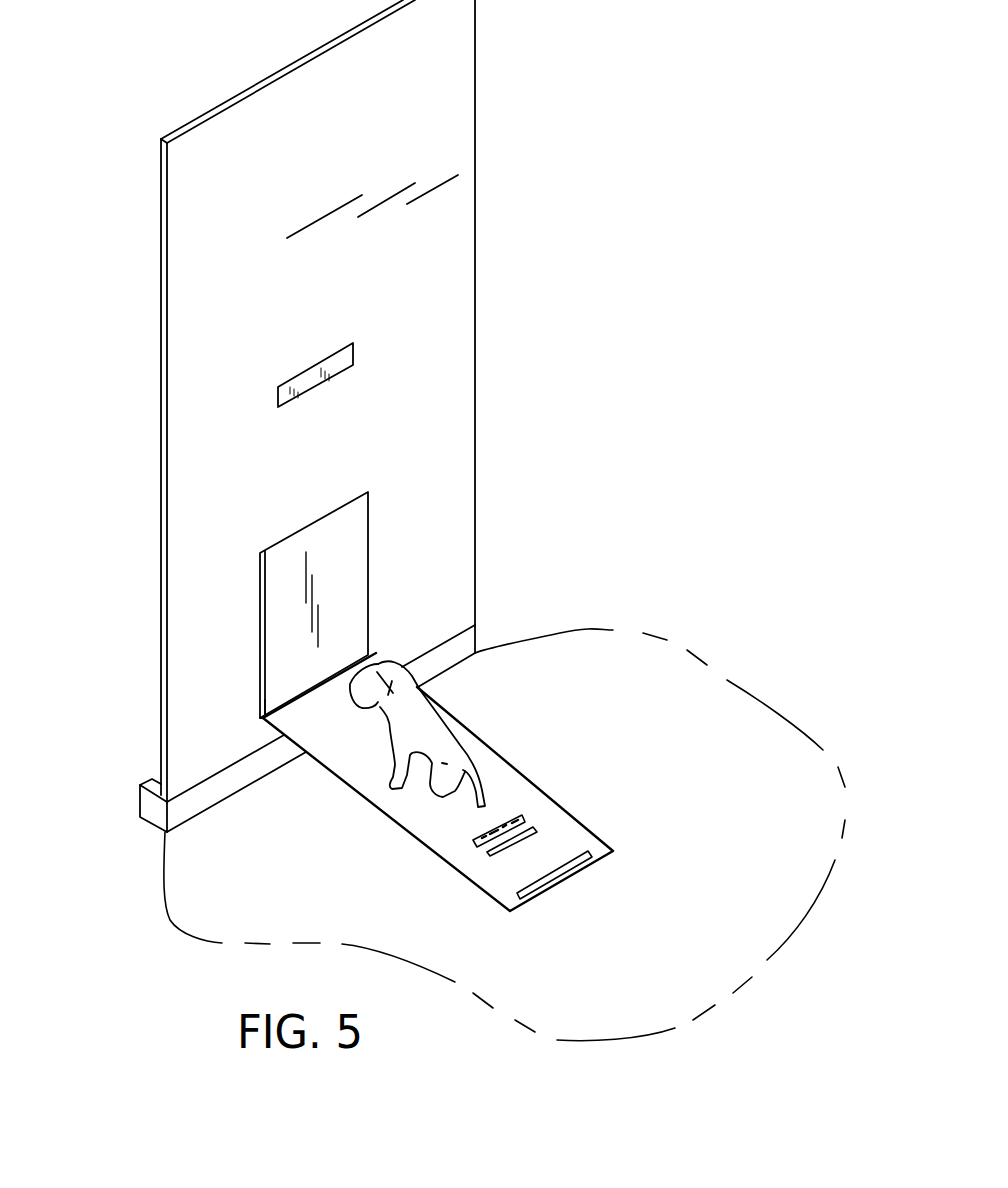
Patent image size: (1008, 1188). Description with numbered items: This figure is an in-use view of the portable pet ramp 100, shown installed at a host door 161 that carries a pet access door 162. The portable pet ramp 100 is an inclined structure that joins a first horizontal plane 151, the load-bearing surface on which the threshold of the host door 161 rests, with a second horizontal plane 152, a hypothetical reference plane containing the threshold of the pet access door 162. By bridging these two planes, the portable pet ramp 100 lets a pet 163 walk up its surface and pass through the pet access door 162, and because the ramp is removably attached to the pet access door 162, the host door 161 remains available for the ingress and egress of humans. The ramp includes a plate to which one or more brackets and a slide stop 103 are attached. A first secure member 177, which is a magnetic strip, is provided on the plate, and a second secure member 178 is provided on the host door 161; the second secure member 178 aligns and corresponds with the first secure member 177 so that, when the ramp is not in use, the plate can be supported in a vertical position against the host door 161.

The portable pet ramp 100 is at (575, 830).
The slide stop 103 is at (490, 853).
The first horizontal plane 151 is at (150, 788).
The second horizontal plane 152 is at (283, 702).
The host door 161 is at (475, 414).
The pet access door 162 is at (342, 565).
The pet 163 is at (433, 730).
The first secure member 177 is at (563, 873).
The second secure member 178 is at (353, 355).